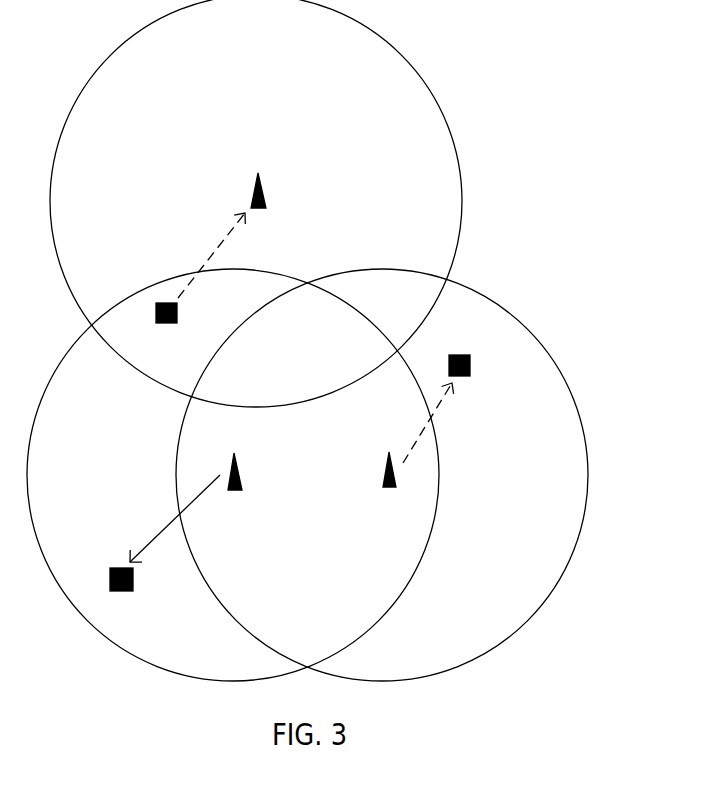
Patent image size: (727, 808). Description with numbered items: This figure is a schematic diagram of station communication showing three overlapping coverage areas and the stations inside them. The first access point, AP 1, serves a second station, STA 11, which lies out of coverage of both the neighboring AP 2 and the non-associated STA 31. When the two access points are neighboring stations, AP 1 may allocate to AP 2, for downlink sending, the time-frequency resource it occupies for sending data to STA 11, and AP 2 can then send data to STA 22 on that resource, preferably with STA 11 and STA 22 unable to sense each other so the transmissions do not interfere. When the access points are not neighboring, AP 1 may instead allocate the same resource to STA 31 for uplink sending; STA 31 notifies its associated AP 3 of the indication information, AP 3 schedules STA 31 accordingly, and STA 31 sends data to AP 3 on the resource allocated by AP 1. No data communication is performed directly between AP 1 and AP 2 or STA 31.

The AP 1 is at (243, 490).
The AP 2 is at (375, 487).
The AP 3 is at (271, 208).
The STA 11 is at (139, 597).
The STA 22 is at (496, 383).
The STA 31 is at (165, 328).